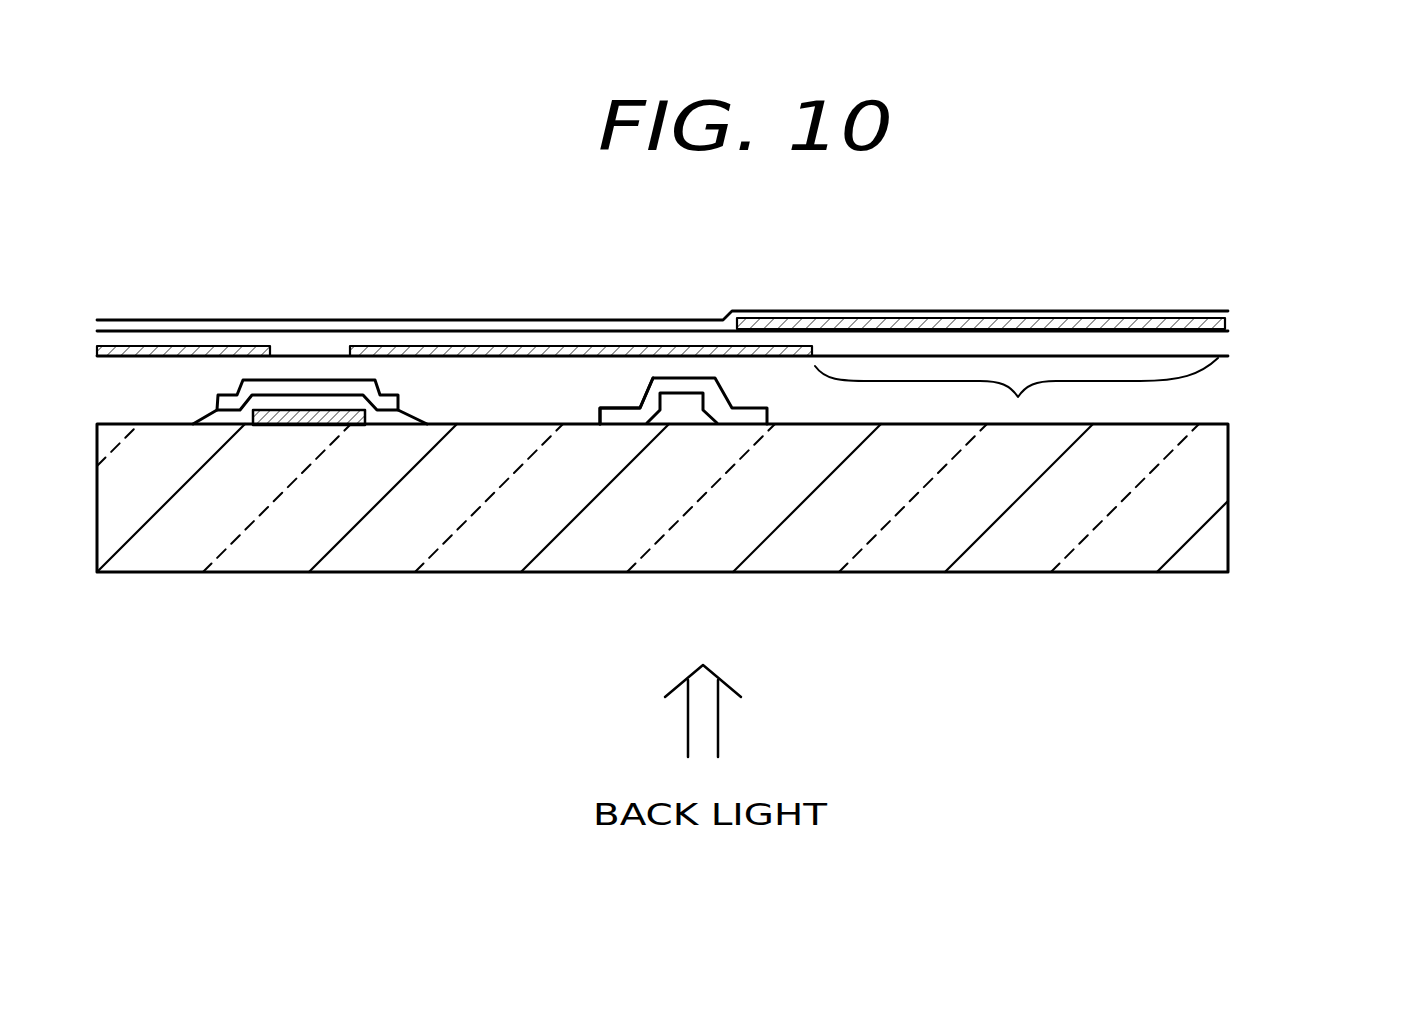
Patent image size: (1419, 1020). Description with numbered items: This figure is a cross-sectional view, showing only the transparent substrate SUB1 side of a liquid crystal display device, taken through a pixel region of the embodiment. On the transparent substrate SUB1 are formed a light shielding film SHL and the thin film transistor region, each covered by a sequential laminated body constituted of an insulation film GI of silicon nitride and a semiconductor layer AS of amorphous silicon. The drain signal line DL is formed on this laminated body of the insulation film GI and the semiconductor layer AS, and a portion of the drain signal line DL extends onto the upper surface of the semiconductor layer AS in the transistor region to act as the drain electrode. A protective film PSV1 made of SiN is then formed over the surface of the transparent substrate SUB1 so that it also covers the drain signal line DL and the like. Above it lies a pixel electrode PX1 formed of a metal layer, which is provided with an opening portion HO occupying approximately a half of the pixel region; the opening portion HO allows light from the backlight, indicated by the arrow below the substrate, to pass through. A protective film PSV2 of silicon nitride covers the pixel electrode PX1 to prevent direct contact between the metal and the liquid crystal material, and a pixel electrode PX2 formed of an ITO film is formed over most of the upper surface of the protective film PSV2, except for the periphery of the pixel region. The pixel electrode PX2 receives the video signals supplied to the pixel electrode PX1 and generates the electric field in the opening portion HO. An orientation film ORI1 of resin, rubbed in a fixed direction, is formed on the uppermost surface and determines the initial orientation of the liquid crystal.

The transparent substrate SUB1 is at (1210, 480).
The protective film PSV1 is at (1217, 395).
The protective film PSV2 is at (1217, 341).
The orientation film ORI1 is at (1020, 310).
The pixel electrode PX1 is at (608, 348).
The pixel electrode PX2 is at (1210, 320).
The opening portion HO is at (1018, 400).
The insulation film GI is at (222, 418).
The semiconductor layer AS is at (386, 402).
The light shielding film SHL is at (290, 420).
The drain signal line DL is at (618, 415).